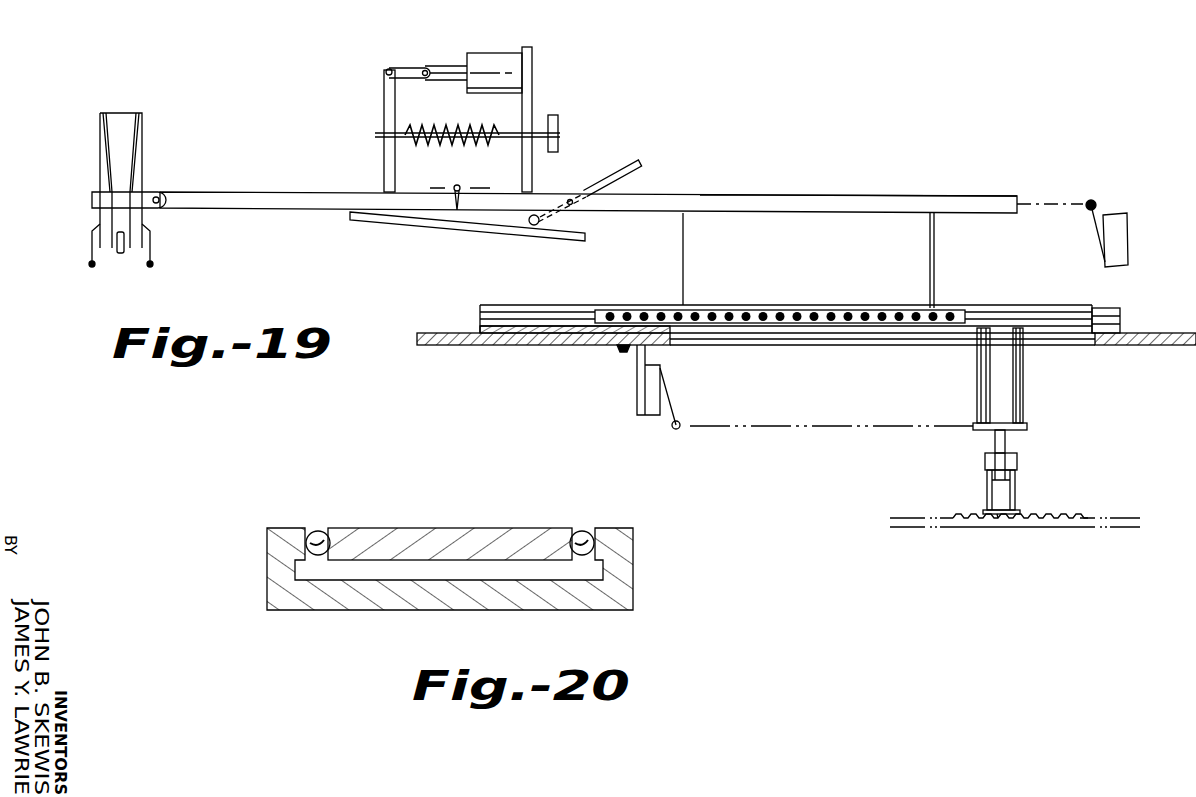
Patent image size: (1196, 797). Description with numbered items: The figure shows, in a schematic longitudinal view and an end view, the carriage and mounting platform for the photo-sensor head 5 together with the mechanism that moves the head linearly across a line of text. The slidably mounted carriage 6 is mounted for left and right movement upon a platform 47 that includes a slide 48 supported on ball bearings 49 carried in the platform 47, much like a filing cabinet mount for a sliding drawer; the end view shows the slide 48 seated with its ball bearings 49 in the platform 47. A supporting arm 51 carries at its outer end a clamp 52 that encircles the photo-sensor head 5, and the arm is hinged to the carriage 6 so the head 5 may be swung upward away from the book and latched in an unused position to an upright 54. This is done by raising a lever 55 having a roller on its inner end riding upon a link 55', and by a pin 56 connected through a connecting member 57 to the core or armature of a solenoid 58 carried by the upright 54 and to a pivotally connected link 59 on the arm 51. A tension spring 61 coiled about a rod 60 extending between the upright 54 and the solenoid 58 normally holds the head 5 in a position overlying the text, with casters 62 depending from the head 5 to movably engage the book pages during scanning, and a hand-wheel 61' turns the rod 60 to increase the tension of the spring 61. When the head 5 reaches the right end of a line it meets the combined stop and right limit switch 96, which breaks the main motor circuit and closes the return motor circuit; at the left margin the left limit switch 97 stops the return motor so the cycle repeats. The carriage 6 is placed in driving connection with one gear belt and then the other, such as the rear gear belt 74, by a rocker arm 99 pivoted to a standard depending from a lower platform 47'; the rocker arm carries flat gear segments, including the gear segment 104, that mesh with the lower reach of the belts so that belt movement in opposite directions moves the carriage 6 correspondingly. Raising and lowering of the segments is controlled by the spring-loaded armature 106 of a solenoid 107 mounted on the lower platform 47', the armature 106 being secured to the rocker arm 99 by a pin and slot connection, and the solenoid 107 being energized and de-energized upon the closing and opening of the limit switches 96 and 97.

In FIG. 19, the photo-sensor head 5 is at (96, 119).
In FIG. 19, the carriage 6 is at (906, 195).
In FIG. 19, the platform 47 is at (806, 324).
In FIG. 20, the platform 47 is at (474, 569).
In FIG. 19, the lower platform 47' is at (957, 260).
In FIG. 19, the slide 48 is at (989, 307).
In FIG. 20, the slide 48 is at (505, 528).
In FIG. 19, the ball bearings 49 is at (640, 308).
In FIG. 20, the ball bearings 49 is at (584, 530).
In FIG. 19, the supporting arm 51 is at (245, 191).
In FIG. 19, the clamp 52 is at (92, 200).
In FIG. 19, the upright 54 is at (533, 70).
In FIG. 19, the lever 55 is at (585, 177).
In FIG. 19, the link 55' is at (467, 218).
In FIG. 19, the pin 56 is at (385, 69).
In FIG. 19, the link 57 is at (409, 69).
In FIG. 19, the solenoid 58 is at (496, 53).
In FIG. 19, the link 59 is at (383, 103).
In FIG. 19, the rod 60 is at (536, 131).
In FIG. 19, the tension spring 61 is at (452, 147).
In FIG. 19, the hand-wheel 61' is at (578, 128).
In FIG. 19, the casters 62 is at (148, 266).
In FIG. 19, the rear gear belt 74 is at (1076, 528).
In FIG. 19, the right limit switch 96 is at (1100, 228).
In FIG. 19, the left limit switch 97 is at (678, 412).
In FIG. 19, the rocker arm 99 is at (1016, 496).
In FIG. 19, the gear segment 104 is at (1000, 518).
In FIG. 19, the armature 106 is at (1006, 443).
In FIG. 19, the solenoid 107 is at (1025, 388).